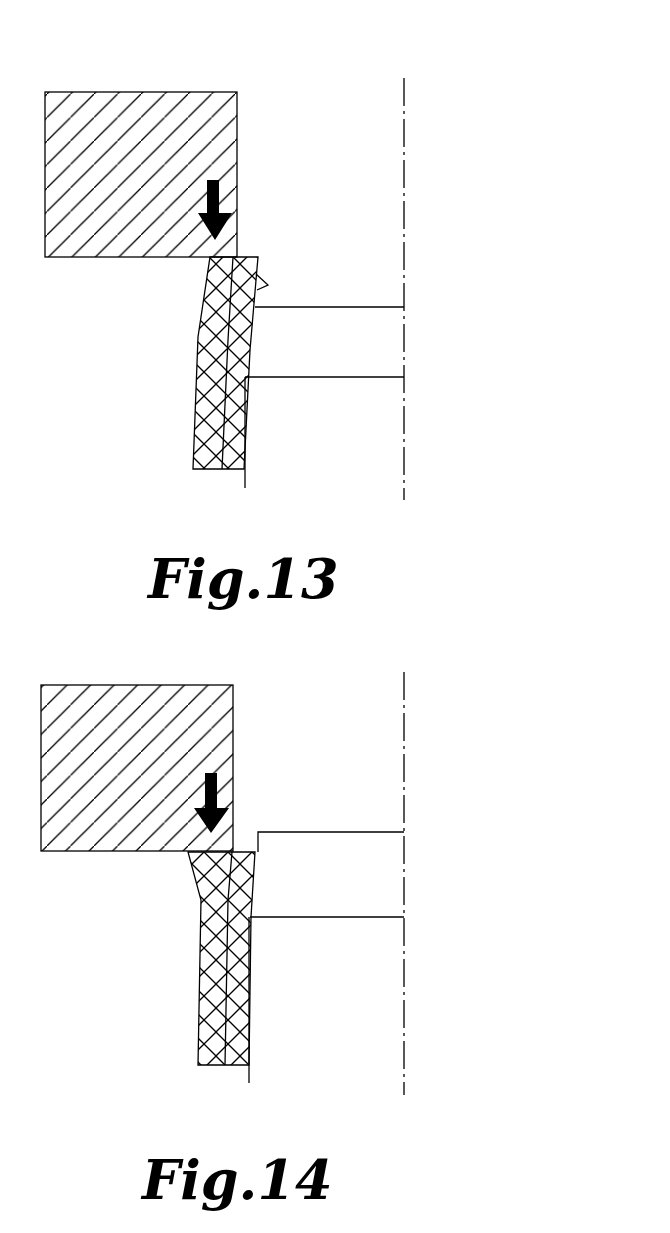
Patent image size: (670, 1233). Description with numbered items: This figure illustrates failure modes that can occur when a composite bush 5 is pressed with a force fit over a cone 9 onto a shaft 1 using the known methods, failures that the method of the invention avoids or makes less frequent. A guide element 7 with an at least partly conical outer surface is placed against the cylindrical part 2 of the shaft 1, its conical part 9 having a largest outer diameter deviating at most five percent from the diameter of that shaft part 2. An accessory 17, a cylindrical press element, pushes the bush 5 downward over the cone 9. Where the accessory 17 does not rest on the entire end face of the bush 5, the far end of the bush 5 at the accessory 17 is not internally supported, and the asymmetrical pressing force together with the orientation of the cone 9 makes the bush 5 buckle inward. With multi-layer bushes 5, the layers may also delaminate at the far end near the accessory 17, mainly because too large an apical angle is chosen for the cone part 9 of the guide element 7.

In FIG. 13, the shaft 1 is at (504, 429).
In FIG. 14, the shaft 1 is at (504, 1024).
In FIG. 13, the cylindrical part of the shaft 2 is at (504, 335).
In FIG. 14, the cylindrical part of the shaft 2 is at (504, 871).
In FIG. 13, the bush 5 is at (200, 330).
In FIG. 14, the bush 5 is at (210, 927).
In FIG. 13, the guide element 7 is at (359, 441).
In FIG. 14, the guide element 7 is at (359, 1038).
In FIG. 13, the conical part of the guide element 9 is at (364, 340).
In FIG. 14, the conical part of the guide element 9 is at (364, 877).
In FIG. 13, the accessory 17 is at (188, 118).
In FIG. 14, the accessory 17 is at (183, 710).